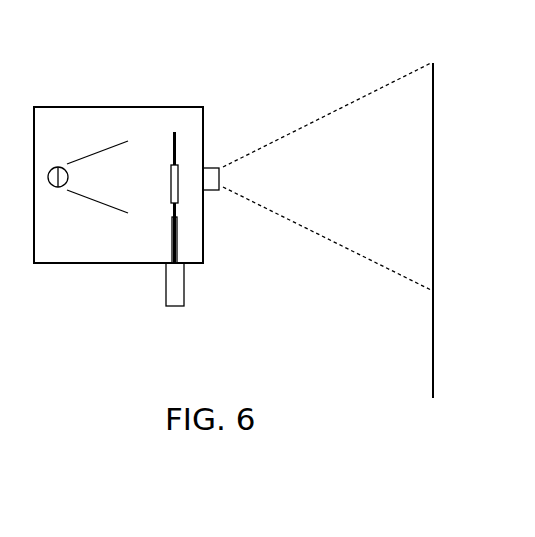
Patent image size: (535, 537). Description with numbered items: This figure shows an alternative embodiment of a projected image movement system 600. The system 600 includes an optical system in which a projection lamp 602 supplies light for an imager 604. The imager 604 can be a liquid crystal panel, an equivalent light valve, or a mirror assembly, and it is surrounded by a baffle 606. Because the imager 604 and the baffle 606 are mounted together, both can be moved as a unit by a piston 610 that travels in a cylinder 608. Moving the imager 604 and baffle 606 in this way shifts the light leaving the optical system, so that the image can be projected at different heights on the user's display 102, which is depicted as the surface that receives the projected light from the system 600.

The projected image movement system 600 is at (118, 58).
The projection lamp 602 is at (57, 187).
The imager 604 is at (171, 192).
The baffle 606 is at (173, 141).
The cylinder 608 is at (184, 280).
The piston 610 is at (178, 226).
The user's display 102 is at (433, 330).